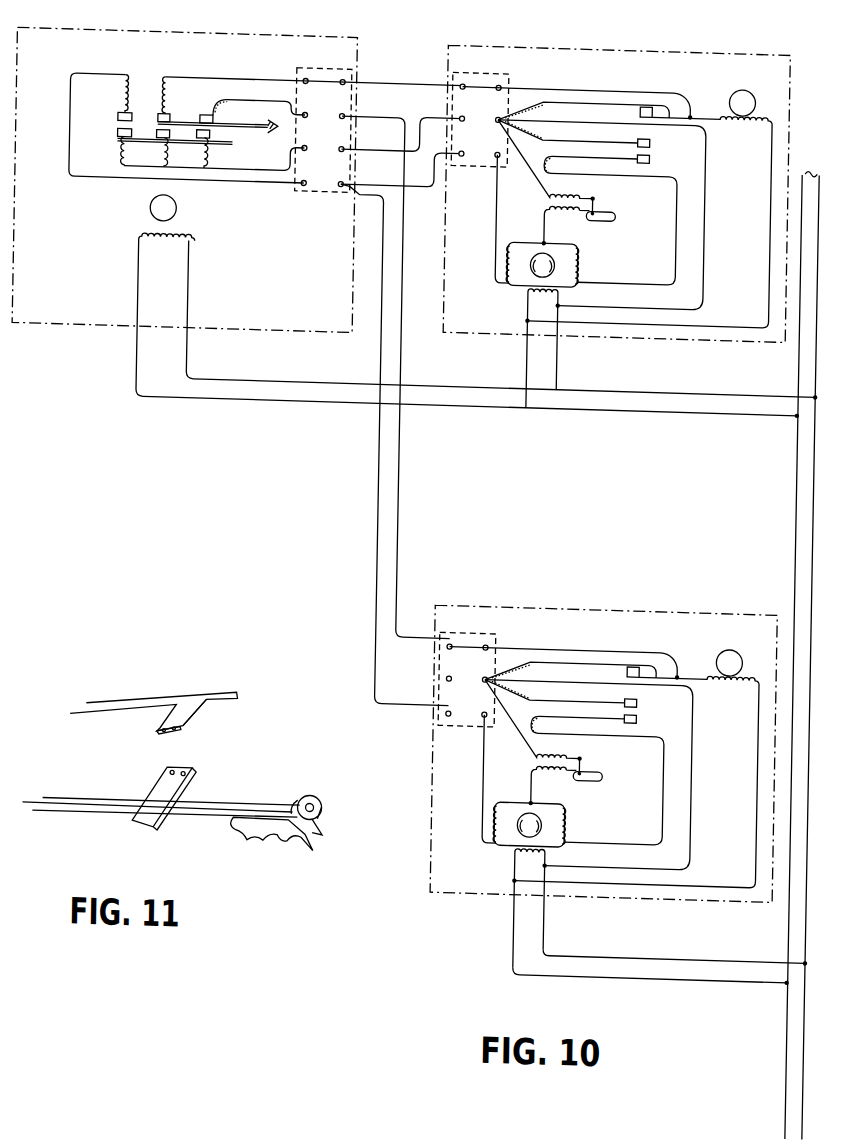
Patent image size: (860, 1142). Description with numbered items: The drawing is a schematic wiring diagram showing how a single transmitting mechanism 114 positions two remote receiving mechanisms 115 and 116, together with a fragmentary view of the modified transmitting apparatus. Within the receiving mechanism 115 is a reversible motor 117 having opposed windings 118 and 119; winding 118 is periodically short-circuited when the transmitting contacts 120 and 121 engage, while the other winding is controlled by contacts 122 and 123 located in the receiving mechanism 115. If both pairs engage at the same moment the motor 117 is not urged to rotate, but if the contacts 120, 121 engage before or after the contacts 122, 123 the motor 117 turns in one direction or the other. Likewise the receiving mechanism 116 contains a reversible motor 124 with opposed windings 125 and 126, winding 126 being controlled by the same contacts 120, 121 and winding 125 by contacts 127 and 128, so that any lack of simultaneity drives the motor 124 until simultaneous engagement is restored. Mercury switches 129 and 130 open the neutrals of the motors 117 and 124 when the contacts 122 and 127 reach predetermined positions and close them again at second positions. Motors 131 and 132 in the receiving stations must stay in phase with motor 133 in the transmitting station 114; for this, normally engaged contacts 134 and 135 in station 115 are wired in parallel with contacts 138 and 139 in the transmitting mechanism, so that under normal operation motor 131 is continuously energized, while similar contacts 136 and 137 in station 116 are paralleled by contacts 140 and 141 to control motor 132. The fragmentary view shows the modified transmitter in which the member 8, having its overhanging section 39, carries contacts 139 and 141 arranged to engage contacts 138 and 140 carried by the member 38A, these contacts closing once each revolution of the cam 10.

In FIG. 10, the transmitting mechanism 114 is at (228, 307).
In FIG. 10, the receiving mechanism 115 is at (708, 304).
In FIG. 10, the second receiving mechanism 116 is at (603, 753).
In FIG. 10, the reversible motor 117 is at (588, 273).
In FIG. 10, the winding 118 is at (505, 263).
In FIG. 10, the winding 119 is at (577, 251).
In FIG. 10, the contact 120 is at (113, 148).
In FIG. 10, the contact 121 is at (113, 128).
In FIG. 10, the contact 122 is at (645, 155).
In FIG. 10, the contact 123 is at (645, 139).
In FIG. 10, the reversible motor 124 is at (556, 825).
In FIG. 10, the winding 125 is at (579, 819).
In FIG. 10, the winding 126 is at (467, 821).
In FIG. 10, the contact 127 is at (603, 778).
In FIG. 10, the contact 128 is at (581, 696).
In FIG. 10, the mercury switch 129 is at (611, 212).
In FIG. 10, the mercury switch 130 is at (561, 744).
In FIG. 10, the motor 131 is at (649, 219).
In FIG. 10, the motor 132 is at (636, 779).
In FIG. 10, the motor 133 is at (179, 217).
In FIG. 10, the contact 134 is at (635, 108).
In FIG. 10, the contact 135 is at (668, 88).
In FIG. 10, the contact 136 is at (570, 673).
In FIG. 10, the contact 137 is at (564, 652).
In FIG. 10, the contact 138 is at (156, 122).
In FIG. 11, the contact 138 is at (171, 742).
In FIG. 10, the contact 139 is at (176, 149).
In FIG. 11, the contact 139 is at (174, 783).
In FIG. 10, the contact 140 is at (211, 130).
In FIG. 11, the contact 140 is at (191, 737).
In FIG. 10, the contact 141 is at (218, 152).
In FIG. 11, the contact 141 is at (200, 791).
In FIG. 11, the member 38A is at (165, 702).
In FIG. 11, the member 8 is at (212, 824).
In FIG. 11, the cam 10 is at (285, 860).
In FIG. 11, the overhanging section 39 is at (318, 853).